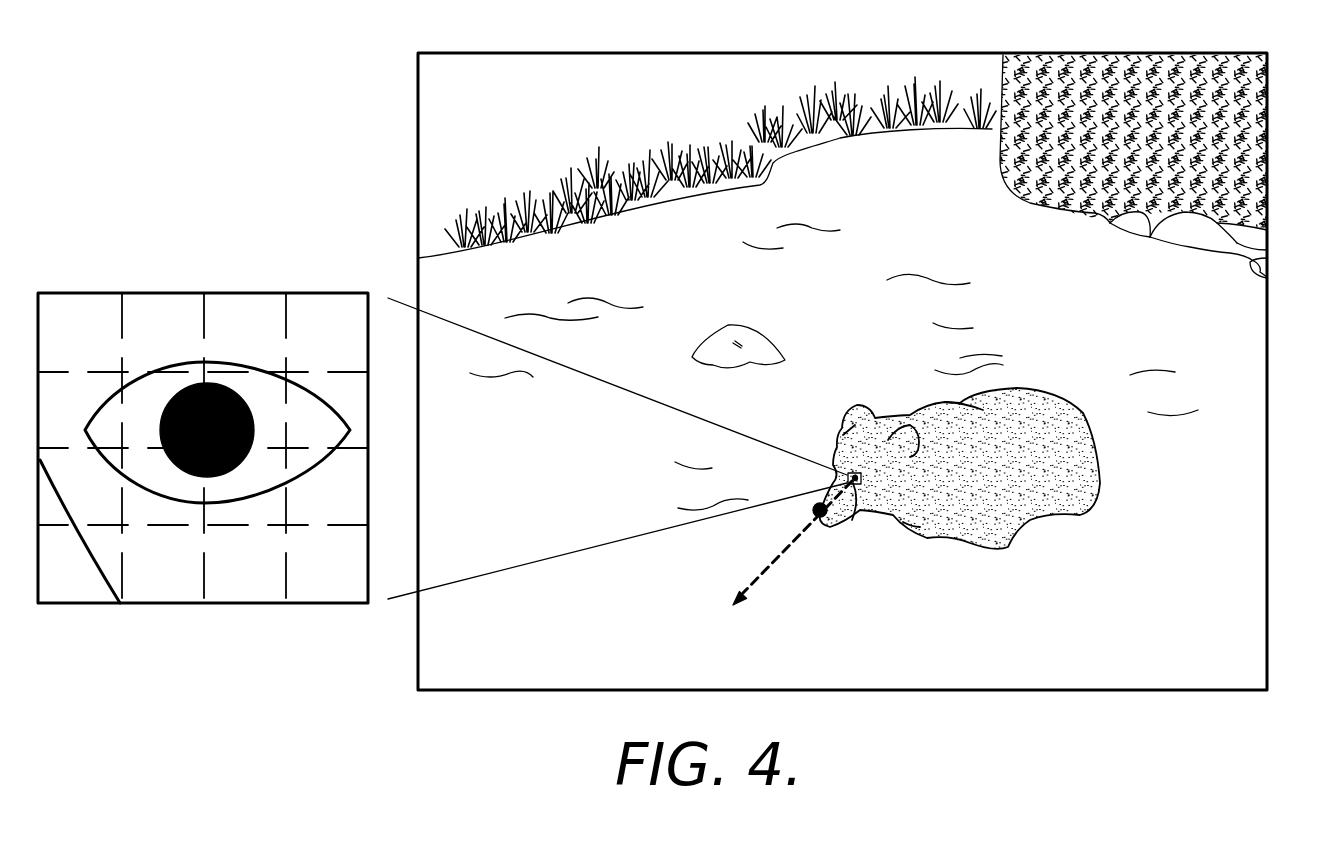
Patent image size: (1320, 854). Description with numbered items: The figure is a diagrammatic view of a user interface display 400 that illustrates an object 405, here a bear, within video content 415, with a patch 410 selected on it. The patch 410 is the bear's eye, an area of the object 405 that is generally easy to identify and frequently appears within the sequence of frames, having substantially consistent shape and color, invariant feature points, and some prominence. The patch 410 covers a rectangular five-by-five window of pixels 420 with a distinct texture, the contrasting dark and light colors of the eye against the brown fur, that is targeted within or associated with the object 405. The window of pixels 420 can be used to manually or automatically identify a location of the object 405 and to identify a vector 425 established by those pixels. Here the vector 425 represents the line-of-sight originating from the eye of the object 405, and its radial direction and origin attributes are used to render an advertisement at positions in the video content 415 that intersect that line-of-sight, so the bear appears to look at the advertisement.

The user interface display 400 is at (105, 90).
The object 405 is at (1033, 387).
The patch 410 is at (178, 293).
The video content 415 is at (887, 53).
The window of pixels 420 is at (140, 268).
The vector 425 is at (788, 550).